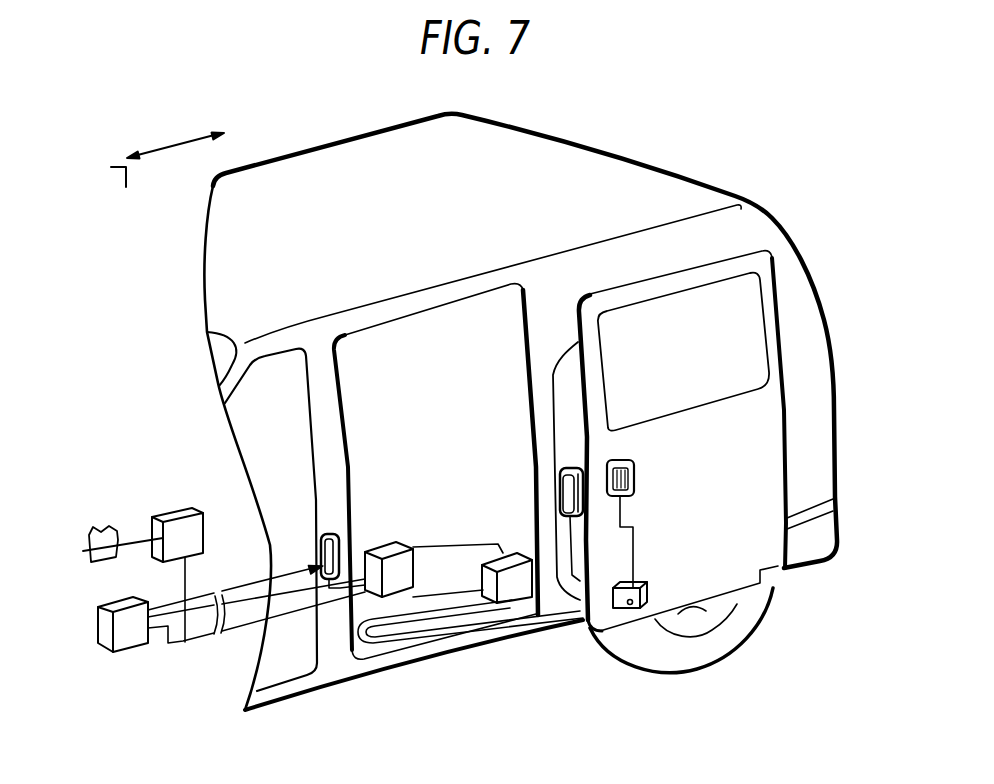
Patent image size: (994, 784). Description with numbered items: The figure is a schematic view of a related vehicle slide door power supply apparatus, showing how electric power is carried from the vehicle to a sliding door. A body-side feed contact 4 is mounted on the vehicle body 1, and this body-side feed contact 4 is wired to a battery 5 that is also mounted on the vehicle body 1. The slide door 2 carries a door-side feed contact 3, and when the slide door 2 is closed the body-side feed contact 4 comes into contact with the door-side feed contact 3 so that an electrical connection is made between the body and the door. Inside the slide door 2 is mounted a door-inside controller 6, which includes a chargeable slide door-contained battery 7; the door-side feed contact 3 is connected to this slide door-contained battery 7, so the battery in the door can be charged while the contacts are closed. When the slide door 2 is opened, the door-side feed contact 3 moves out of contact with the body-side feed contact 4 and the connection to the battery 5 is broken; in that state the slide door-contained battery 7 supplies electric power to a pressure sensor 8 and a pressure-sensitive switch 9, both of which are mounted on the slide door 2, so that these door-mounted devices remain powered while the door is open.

The vehicle body 1 is at (330, 665).
The slide door 2 is at (750, 449).
The door-side feed contact 3 is at (570, 477).
The body-side feed contact 4 is at (327, 548).
The battery 5 is at (130, 633).
The door-inside controller 6 is at (641, 592).
The slide door-contained battery 7 is at (630, 607).
The pressure sensor 8 is at (637, 473).
The pressure-sensitive switch 9 is at (577, 308).